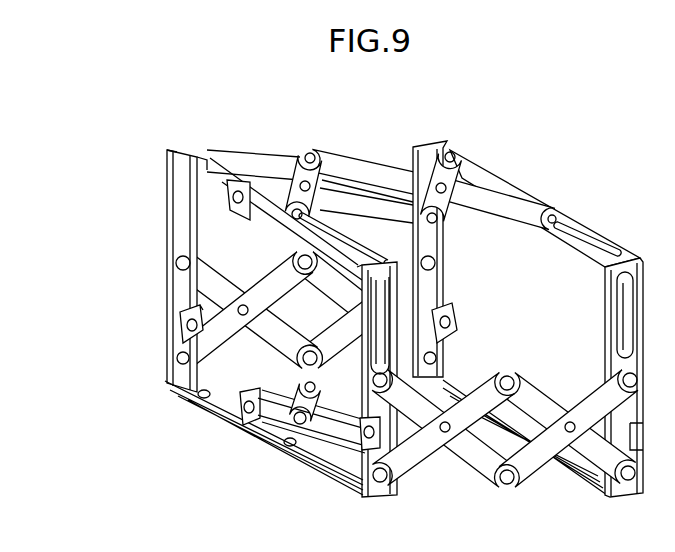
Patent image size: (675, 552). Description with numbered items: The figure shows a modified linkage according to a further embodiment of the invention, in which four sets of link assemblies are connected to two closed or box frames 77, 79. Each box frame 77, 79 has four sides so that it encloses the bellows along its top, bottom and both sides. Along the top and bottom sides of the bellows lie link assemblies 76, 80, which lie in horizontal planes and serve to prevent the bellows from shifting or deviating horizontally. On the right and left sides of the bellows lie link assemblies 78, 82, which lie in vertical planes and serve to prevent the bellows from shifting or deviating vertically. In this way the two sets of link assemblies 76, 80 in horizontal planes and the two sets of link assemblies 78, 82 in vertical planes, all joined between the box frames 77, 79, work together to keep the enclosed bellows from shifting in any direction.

The link assembly 76 is at (344, 149).
The box frame 77 is at (625, 258).
The link assembly 78 is at (532, 473).
The box frame 79 is at (188, 150).
The link assembly 80 is at (339, 451).
The link assembly 82 is at (241, 341).